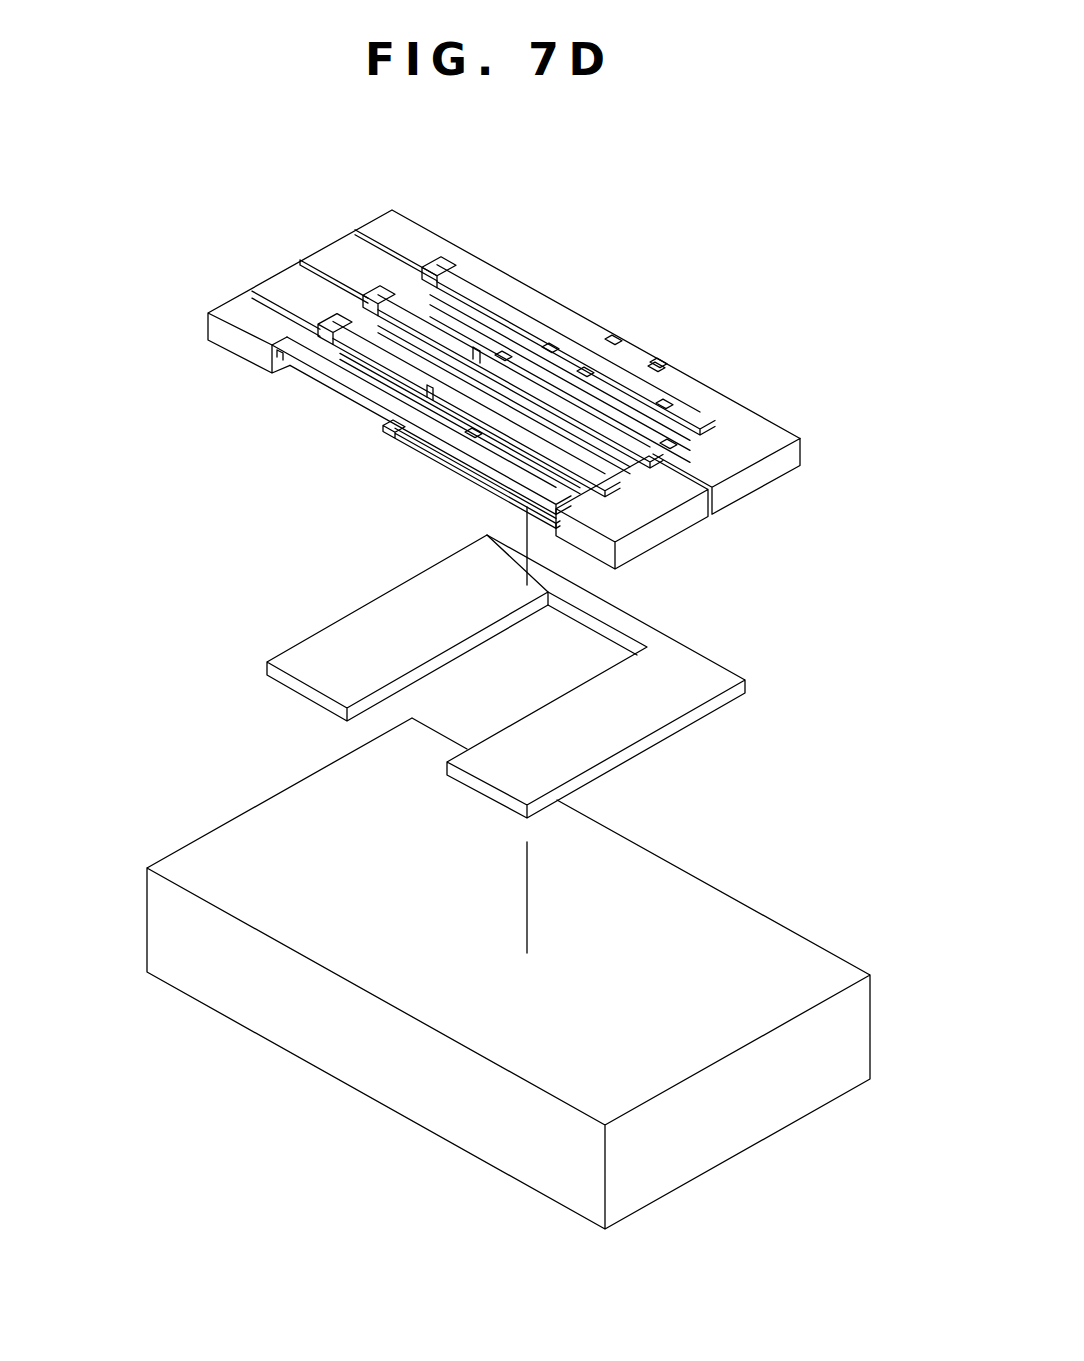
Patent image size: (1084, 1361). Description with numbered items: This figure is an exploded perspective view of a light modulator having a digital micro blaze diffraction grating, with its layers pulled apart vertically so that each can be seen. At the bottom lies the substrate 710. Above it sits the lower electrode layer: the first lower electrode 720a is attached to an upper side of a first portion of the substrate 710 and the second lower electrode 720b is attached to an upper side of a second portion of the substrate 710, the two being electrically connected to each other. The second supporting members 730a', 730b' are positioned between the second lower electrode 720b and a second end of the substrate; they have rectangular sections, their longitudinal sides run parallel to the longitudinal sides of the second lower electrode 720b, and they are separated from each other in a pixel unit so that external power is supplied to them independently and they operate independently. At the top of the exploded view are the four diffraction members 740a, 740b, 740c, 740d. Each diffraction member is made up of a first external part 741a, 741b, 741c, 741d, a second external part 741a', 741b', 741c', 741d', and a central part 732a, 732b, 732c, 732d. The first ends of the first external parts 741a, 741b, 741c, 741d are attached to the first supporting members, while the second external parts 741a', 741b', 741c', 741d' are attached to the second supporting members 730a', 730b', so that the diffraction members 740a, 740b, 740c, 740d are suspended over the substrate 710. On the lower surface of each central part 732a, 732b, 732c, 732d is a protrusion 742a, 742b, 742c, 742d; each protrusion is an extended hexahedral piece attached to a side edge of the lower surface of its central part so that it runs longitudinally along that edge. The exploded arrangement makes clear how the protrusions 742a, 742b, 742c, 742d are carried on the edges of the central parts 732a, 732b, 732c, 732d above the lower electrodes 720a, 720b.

The substrate 710 is at (665, 1168).
The first lower electrode 720a is at (347, 630).
The second lower electrode 720b is at (597, 743).
The diffraction member 740a is at (275, 348).
The diffraction member 740b is at (317, 320).
The diffraction member 740c is at (362, 293).
The diffraction member 740d is at (413, 268).
The first external part 741a is at (460, 323).
The first external part 741b is at (481, 345).
The first external part 741c is at (534, 320).
The first external part 741d is at (576, 319).
The central part 732a is at (498, 360).
The central part 732b is at (545, 352).
The central part 732c is at (580, 376).
The central part 732d is at (653, 367).
The protrusion 742a is at (392, 427).
The protrusion 742b is at (410, 415).
The protrusion 742c is at (432, 425).
The protrusion 742d is at (470, 437).
The second external part 741a' is at (753, 407).
The second external part 741b' is at (741, 369).
The second external part 741c' is at (735, 329).
The second external part 741d' is at (682, 321).
The second supporting member 730a' is at (665, 518).
The second supporting member 730b' is at (760, 483).